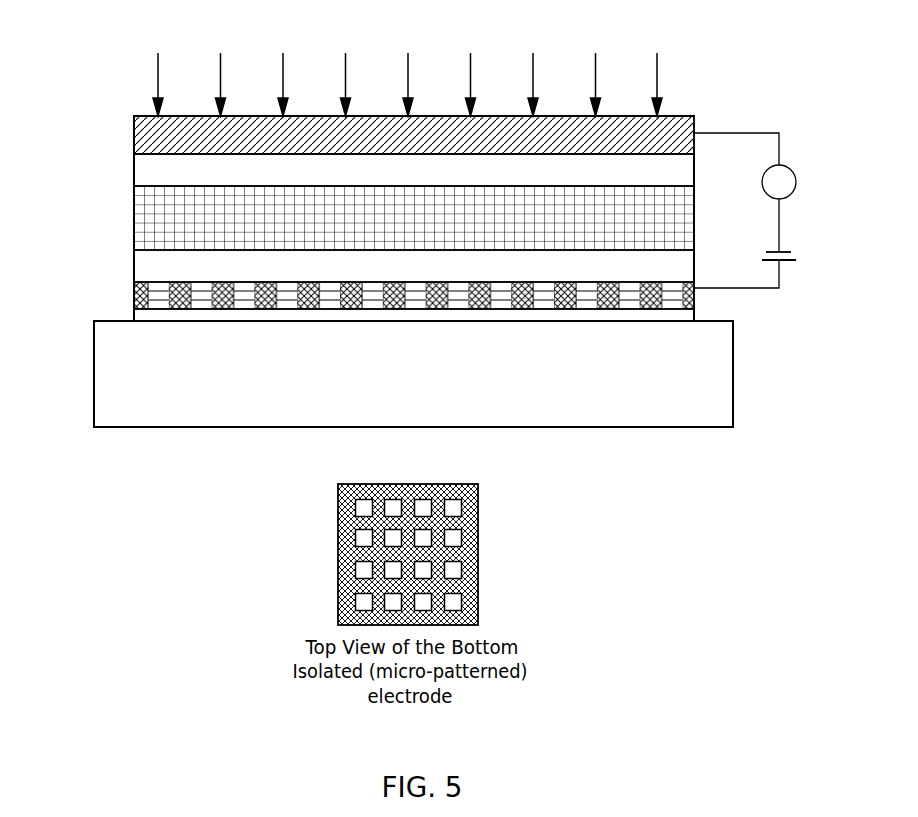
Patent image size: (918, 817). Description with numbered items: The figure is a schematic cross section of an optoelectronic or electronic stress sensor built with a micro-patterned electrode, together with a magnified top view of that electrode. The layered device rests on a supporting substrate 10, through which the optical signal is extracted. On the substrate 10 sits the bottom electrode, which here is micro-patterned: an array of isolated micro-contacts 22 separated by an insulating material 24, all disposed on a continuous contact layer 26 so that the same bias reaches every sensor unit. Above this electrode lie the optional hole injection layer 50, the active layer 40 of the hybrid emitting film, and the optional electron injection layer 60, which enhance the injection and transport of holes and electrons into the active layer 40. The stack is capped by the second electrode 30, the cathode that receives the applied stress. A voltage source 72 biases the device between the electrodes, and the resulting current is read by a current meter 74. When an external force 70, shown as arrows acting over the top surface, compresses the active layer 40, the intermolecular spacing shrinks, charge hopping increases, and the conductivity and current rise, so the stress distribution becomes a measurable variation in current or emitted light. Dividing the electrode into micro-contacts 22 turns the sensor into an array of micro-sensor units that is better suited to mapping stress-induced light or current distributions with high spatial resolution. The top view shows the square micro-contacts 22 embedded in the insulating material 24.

The supporting substrate 10 is at (93, 372).
The second electrode 30 is at (133, 143).
The electron injection layer 60 is at (133, 175).
The active layer 40 is at (133, 210).
The hole injection layer 50 is at (133, 265).
The continuous contact layer 26 is at (133, 312).
The micro-contacts 22 is at (675, 299).
The insulating material 24 is at (693, 299).
The external force 70 is at (659, 53).
The voltage source 72 is at (793, 254).
The current meter 74 is at (792, 164).